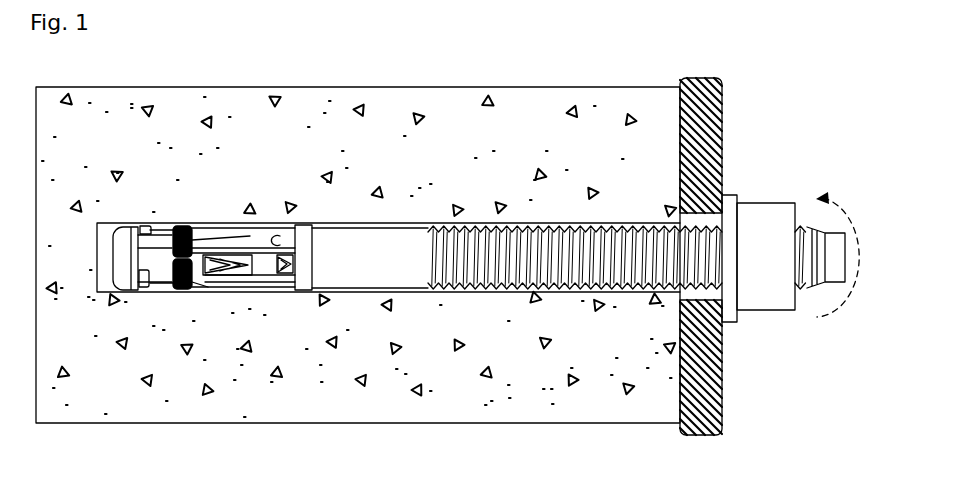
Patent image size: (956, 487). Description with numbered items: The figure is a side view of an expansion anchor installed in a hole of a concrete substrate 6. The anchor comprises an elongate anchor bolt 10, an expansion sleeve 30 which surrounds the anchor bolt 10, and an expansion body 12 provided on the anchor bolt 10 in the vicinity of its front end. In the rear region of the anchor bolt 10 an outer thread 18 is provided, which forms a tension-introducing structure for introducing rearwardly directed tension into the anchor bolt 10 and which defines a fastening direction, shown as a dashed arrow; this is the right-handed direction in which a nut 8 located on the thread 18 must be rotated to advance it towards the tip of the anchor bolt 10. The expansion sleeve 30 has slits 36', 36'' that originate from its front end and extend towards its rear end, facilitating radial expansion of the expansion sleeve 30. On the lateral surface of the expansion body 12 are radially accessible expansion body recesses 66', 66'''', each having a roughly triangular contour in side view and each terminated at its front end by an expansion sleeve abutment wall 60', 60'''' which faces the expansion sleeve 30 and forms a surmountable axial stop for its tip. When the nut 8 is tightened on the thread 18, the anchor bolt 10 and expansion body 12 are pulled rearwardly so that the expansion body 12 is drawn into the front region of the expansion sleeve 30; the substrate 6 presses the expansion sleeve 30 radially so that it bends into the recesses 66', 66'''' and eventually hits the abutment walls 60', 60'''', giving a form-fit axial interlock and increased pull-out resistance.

The substrate 6 is at (510, 395).
The nut 8 is at (757, 235).
The anchor bolt 10 is at (578, 152).
The expansion body 12 is at (140, 290).
The outer thread 18 is at (556, 228).
The expansion sleeve 30 is at (307, 249).
The slit 36' is at (262, 158).
The slit 36'' is at (329, 366).
The expansion sleeve abutment wall 60'''' is at (178, 140).
The expansion sleeve abutment wall 60' is at (174, 363).
The expansion body recess 66'''' is at (217, 131).
The expansion body recess 66' is at (203, 371).